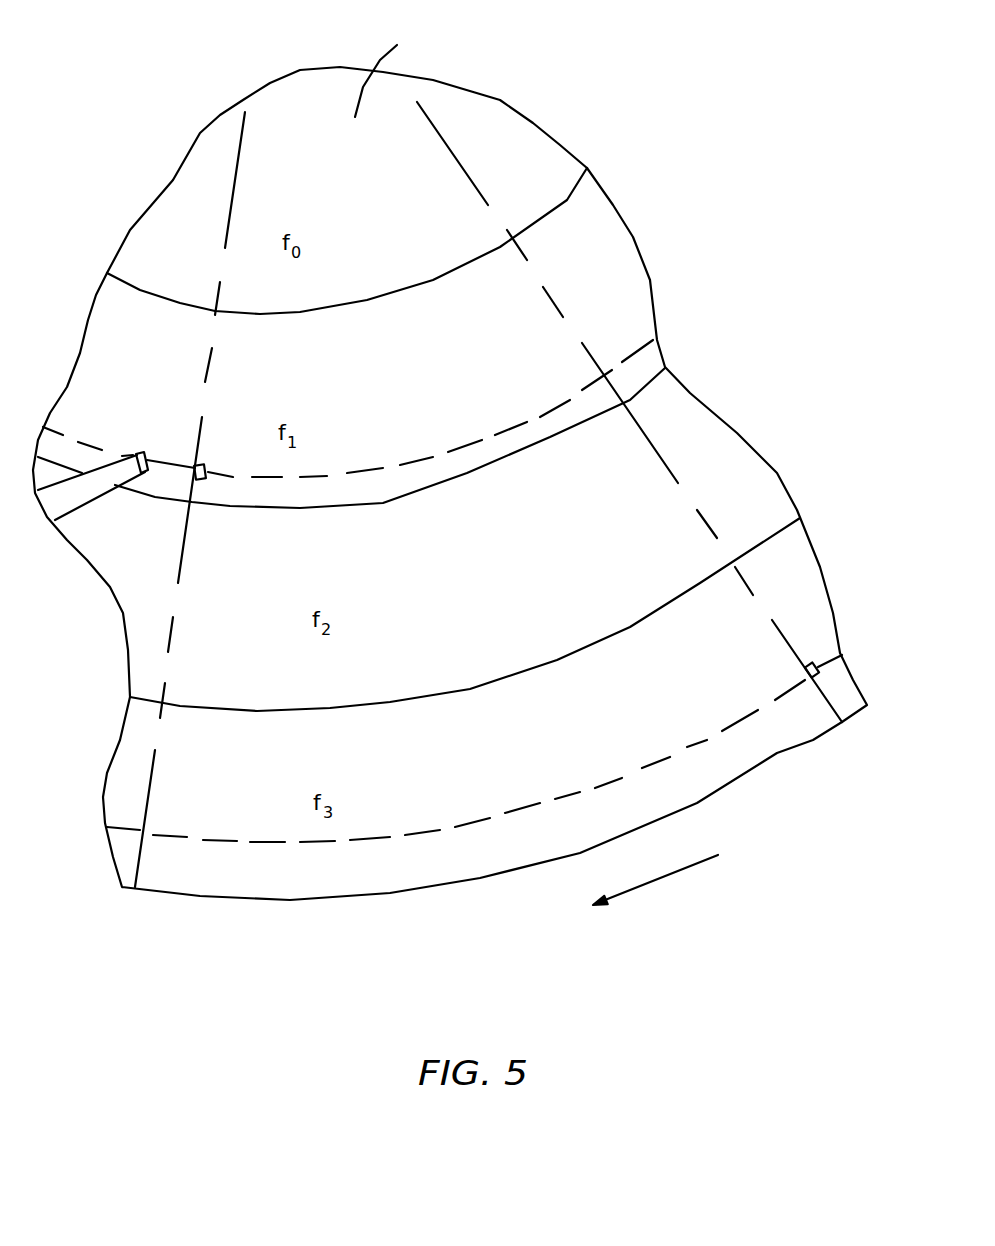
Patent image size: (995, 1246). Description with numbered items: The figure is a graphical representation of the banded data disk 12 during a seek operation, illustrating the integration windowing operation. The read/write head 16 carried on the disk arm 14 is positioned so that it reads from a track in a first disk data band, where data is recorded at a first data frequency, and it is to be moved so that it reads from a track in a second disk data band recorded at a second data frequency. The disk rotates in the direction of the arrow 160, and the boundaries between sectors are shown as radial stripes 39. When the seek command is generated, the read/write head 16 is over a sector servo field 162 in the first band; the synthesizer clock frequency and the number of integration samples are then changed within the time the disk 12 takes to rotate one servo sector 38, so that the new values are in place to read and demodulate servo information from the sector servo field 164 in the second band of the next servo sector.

The banded data disk 12 is at (783, 765).
The disk arm 14 is at (80, 508).
The read/write head 16 is at (117, 418).
The servo sector 38 is at (348, 81).
The radial stripes 39 is at (488, 494).
The arrow 160 is at (668, 880).
The sector servo field 162 is at (207, 473).
The sector servo field 164 is at (820, 672).